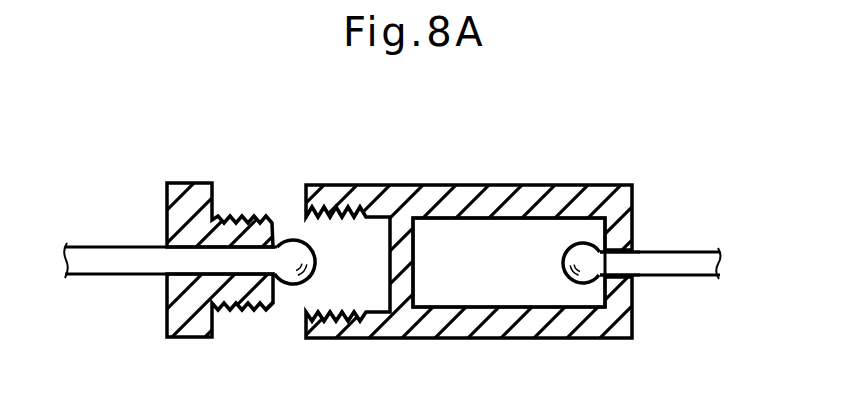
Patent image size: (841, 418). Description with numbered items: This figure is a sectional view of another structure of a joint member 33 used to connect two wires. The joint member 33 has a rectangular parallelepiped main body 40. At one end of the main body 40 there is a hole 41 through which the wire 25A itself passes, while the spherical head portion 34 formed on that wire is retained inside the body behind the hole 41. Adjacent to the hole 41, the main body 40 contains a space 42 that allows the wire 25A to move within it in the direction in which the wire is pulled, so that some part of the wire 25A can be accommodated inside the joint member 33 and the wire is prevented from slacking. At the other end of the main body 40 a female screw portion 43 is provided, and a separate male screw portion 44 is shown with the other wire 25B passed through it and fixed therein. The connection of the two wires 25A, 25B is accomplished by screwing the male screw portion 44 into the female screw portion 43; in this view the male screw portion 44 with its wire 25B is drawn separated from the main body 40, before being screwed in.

The joint member 33 is at (474, 160).
The main body 40 is at (556, 185).
The space 42 is at (532, 295).
The female screw portion 43 is at (322, 218).
The spherical head portion 34 is at (566, 262).
The hole 41 is at (614, 258).
The wire 25A is at (682, 272).
The wire 25B is at (95, 253).
The male screw portion 44 is at (190, 183).